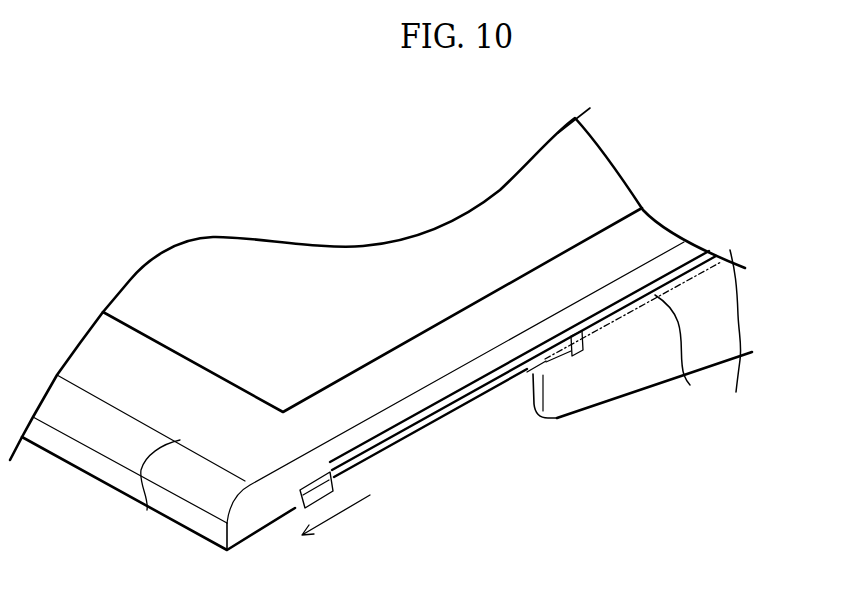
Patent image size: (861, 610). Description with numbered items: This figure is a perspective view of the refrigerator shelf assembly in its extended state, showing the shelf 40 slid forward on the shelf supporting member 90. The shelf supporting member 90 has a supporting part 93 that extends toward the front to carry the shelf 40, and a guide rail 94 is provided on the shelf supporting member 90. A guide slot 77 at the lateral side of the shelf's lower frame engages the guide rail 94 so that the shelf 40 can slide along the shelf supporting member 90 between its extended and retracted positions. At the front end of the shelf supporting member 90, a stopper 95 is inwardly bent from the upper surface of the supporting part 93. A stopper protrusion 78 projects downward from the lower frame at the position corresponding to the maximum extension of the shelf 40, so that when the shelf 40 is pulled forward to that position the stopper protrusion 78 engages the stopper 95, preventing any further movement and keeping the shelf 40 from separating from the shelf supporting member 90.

The shelf 40 is at (147, 510).
The guide slot 77 is at (368, 457).
The stopper protrusion 78 is at (590, 343).
The shelf supporting member 90 is at (721, 335).
The supporting part 93 is at (655, 370).
The guide rail 94 is at (672, 367).
The stopper 95 is at (530, 374).